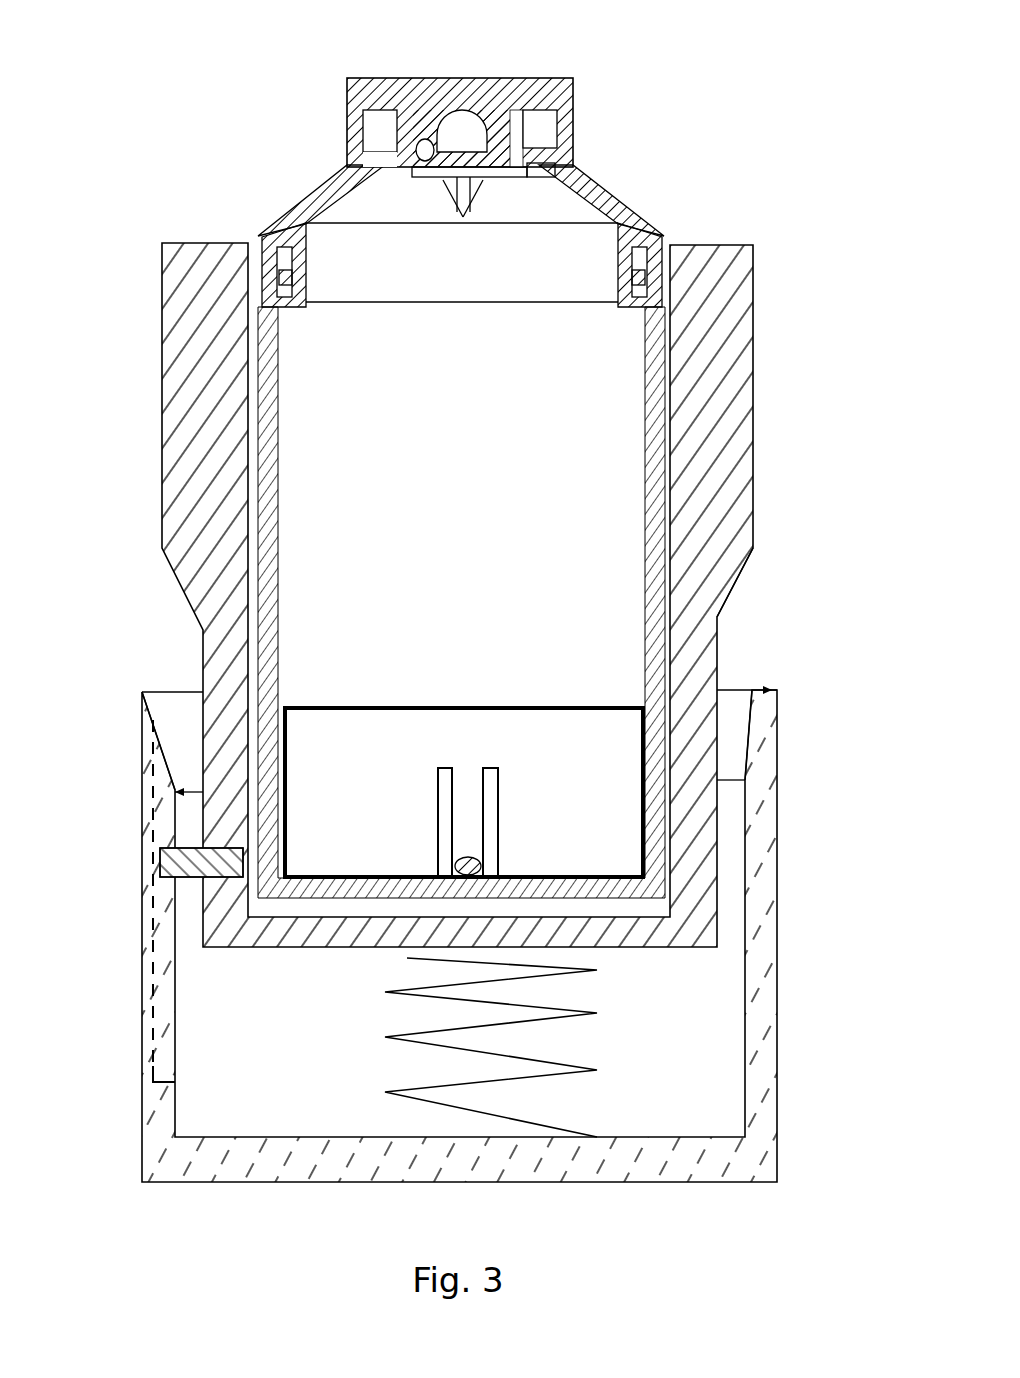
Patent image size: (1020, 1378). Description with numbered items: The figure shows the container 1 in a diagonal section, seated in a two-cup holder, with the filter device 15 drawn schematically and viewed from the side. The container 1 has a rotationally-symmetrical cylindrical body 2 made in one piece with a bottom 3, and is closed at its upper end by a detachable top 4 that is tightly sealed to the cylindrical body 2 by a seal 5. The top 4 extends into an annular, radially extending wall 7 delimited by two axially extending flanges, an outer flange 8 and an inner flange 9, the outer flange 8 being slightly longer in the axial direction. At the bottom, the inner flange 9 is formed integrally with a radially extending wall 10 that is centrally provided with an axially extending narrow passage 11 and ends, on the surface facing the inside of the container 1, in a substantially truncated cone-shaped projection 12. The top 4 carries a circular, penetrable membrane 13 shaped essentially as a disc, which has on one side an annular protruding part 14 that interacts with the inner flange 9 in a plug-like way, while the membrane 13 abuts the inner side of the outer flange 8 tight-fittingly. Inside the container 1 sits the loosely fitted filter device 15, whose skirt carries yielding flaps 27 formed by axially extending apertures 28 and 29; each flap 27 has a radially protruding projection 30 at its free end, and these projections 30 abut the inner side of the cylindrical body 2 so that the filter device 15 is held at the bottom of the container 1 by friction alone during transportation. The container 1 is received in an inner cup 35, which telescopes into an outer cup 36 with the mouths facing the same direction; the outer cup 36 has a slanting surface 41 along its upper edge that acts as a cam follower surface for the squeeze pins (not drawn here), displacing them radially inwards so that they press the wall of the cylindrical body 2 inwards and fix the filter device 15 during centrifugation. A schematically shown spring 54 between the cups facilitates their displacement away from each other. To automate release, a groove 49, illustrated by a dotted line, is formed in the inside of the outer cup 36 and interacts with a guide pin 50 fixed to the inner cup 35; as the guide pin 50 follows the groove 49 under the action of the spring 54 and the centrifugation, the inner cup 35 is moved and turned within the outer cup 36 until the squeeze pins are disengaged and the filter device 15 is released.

The container 1 is at (447, 513).
The cylindrical body 2 is at (655, 446).
The bottom 3 is at (608, 892).
The top 4 is at (300, 216).
The seal 5 is at (640, 280).
The radially extending wall 7 is at (550, 157).
The outer flange 8 is at (497, 88).
The inner flange 9 is at (520, 115).
The radially extending wall 10 is at (497, 183).
The narrow passage 11 is at (460, 213).
The truncated cone-shaped projection 12 is at (448, 193).
The penetrable membrane 13 is at (463, 89).
The annular protruding part 14 is at (430, 137).
The filter device 15 is at (464, 739).
The yielding flaps 27 is at (473, 825).
The aperture 28 is at (497, 792).
The aperture 29 is at (440, 815).
The projection 30 is at (483, 868).
The inner cup 35 is at (720, 591).
The outer cup 36 is at (762, 977).
The slanting surface 41 is at (755, 735).
The groove 49 is at (162, 826).
The guide pin 50 is at (200, 878).
The spring 54 is at (550, 1057).